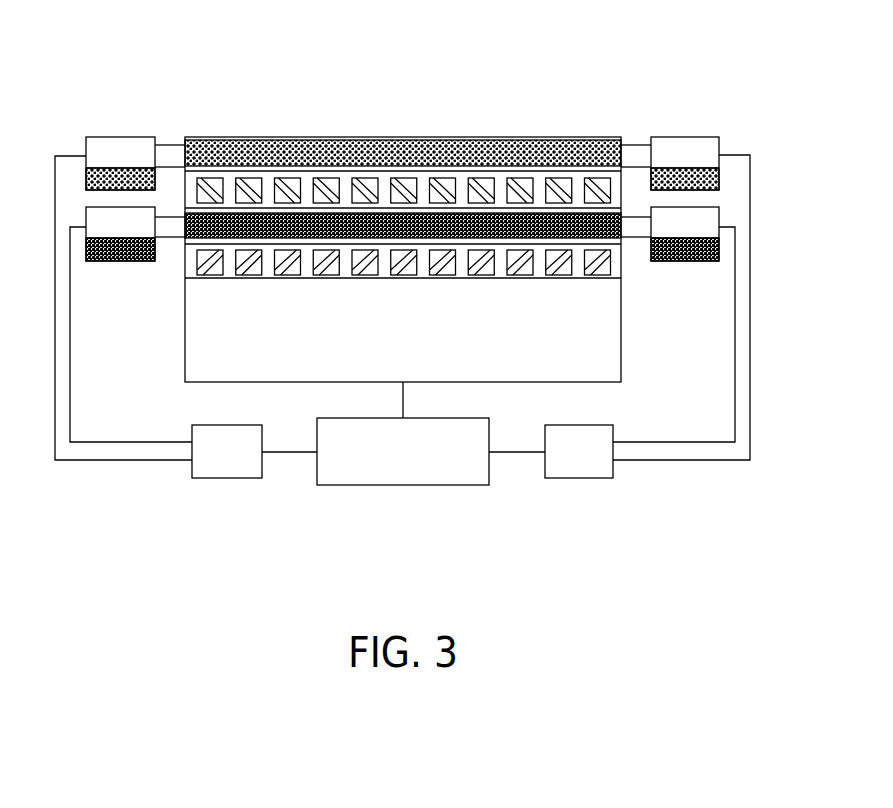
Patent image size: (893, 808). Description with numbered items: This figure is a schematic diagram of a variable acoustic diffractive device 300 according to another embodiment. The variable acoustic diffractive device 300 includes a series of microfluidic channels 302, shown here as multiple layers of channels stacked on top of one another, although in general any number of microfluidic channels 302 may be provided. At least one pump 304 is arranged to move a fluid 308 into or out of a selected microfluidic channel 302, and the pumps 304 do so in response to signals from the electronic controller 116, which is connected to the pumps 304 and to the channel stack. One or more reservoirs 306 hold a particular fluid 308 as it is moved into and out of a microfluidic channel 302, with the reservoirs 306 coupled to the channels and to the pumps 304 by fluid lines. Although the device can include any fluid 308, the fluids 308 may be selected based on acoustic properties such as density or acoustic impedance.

The variable acoustic diffractive device 300 is at (697, 87).
The microfluidic channel 302 is at (290, 152).
The pump 304 is at (223, 480).
The reservoir 306 is at (97, 137).
The fluid 308 is at (90, 180).
The electronic controller 116 is at (402, 485).